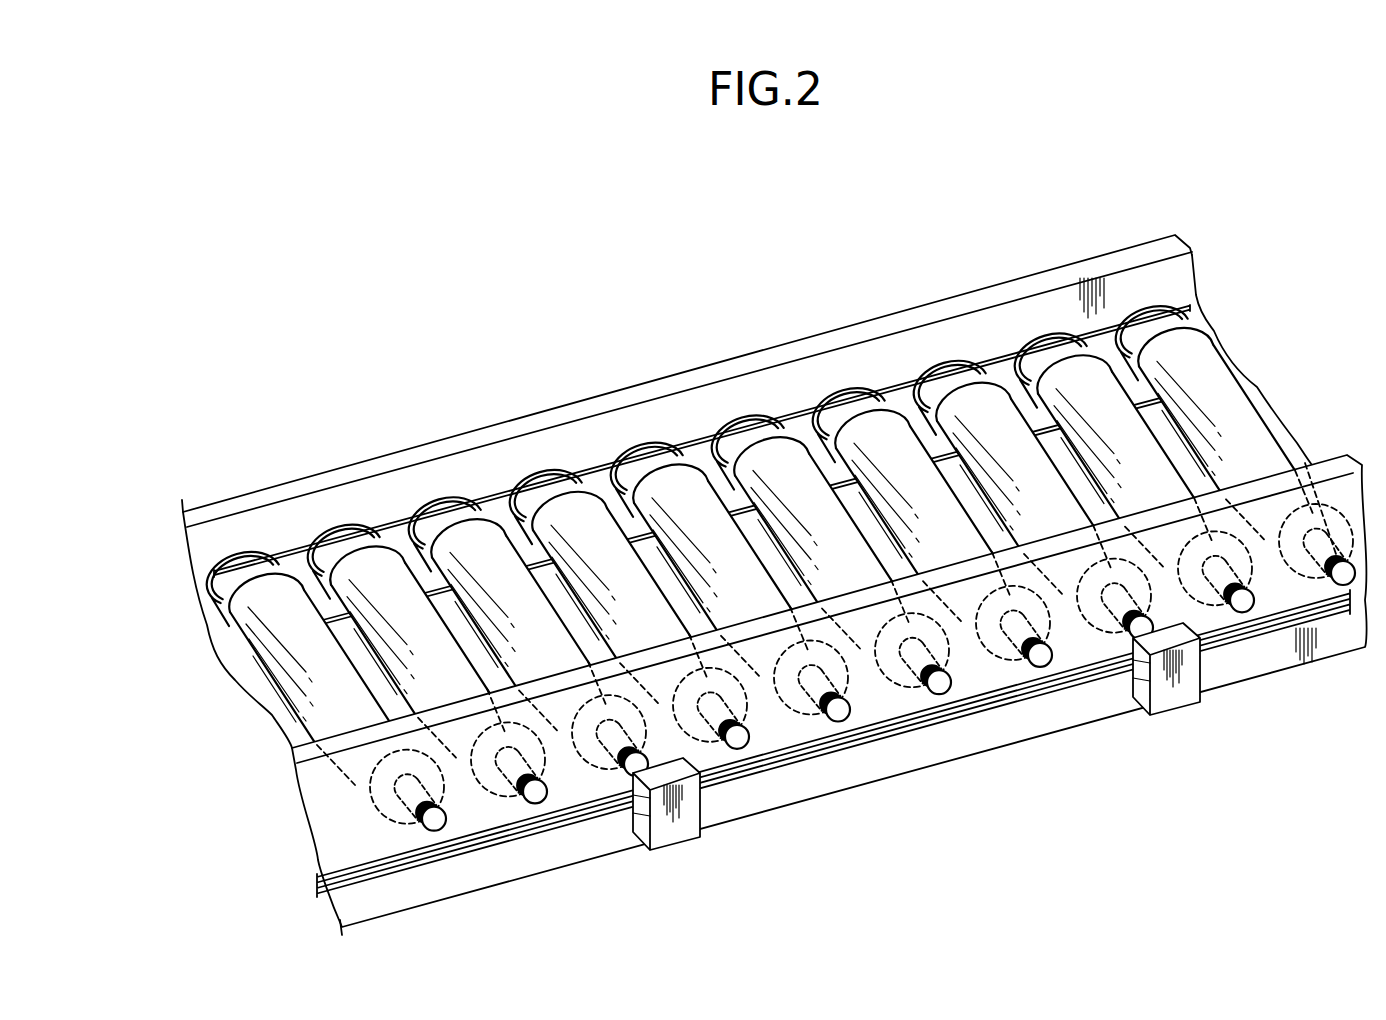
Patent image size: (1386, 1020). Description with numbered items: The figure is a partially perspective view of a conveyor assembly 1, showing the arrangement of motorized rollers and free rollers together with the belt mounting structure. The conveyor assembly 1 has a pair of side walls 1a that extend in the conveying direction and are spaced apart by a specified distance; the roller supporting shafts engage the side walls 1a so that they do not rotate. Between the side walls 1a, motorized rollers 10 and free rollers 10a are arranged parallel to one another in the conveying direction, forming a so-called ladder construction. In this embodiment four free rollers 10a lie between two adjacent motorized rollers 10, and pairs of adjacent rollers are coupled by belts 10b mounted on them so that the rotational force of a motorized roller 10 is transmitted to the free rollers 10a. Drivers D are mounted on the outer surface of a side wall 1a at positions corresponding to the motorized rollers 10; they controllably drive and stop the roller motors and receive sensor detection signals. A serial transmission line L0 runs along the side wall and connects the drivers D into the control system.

The conveyor assembly 1 is at (487, 380).
The side wall 1a is at (265, 522).
The motorized roller 10 is at (468, 556).
The free roller 10a is at (664, 492).
The belt 10b is at (388, 523).
The driver D is at (683, 828).
The serial transmission line L0 is at (483, 848).